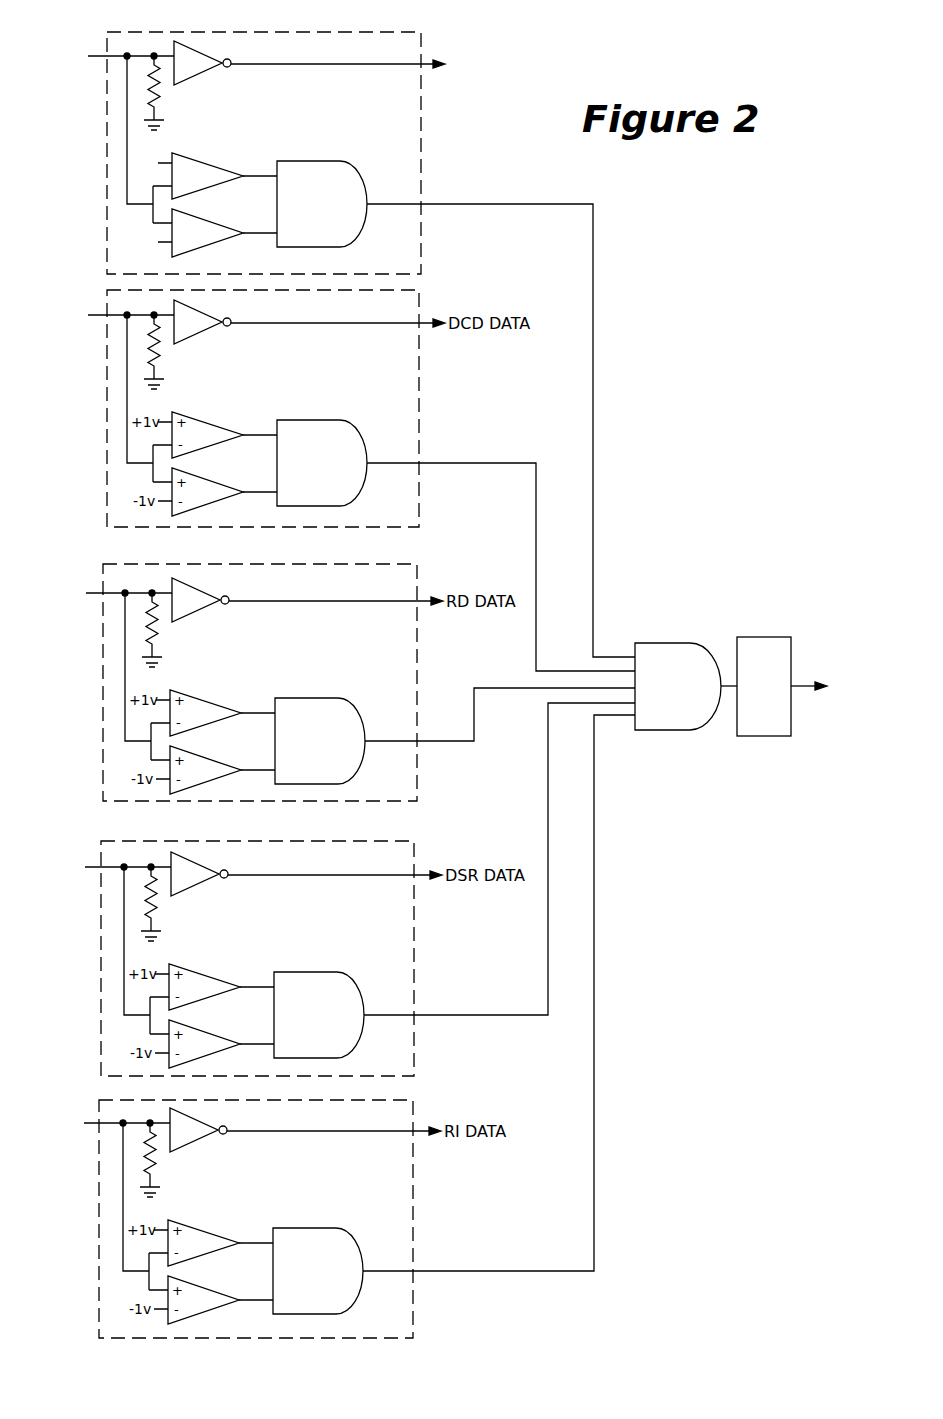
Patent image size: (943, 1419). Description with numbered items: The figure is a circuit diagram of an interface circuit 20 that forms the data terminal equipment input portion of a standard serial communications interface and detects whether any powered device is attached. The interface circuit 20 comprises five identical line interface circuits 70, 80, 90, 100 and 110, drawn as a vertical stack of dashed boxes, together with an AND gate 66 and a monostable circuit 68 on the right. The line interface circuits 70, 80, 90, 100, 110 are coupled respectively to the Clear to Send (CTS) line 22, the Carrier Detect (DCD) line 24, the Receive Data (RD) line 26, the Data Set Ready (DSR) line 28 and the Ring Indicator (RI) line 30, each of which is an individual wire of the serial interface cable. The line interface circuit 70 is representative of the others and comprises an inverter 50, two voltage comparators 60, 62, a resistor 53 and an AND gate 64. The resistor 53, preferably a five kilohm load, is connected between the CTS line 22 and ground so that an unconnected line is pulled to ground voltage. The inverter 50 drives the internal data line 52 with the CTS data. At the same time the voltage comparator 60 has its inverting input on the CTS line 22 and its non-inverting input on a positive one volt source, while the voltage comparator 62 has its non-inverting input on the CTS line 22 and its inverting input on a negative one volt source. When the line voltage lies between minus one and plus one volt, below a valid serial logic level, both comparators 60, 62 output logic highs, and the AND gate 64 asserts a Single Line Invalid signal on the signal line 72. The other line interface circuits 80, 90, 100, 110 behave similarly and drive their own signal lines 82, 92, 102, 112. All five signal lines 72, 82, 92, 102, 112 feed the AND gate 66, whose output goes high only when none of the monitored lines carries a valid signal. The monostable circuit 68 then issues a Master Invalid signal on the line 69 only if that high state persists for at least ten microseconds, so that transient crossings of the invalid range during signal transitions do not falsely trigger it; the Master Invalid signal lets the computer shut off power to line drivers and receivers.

The interface circuit 20 is at (748, 230).
The Clear to Send (CTS) line 22 is at (100, 58).
The Carrier Detect (DCD) line 24 is at (100, 318).
The Receive Data (RD) line 26 is at (98, 596).
The Data Set Ready (DSR) line 28 is at (97, 870).
The Ring Indicator (RI) line 30 is at (91, 1126).
The inverter 50 is at (197, 42).
The internal data line 52 is at (306, 63).
The resistor 53 is at (157, 86).
The voltage comparator 60 is at (207, 160).
The voltage comparator 62 is at (212, 245).
The AND gate 64 is at (335, 160).
The AND gate 66 is at (675, 643).
The monostable circuit 68 is at (765, 637).
The line 69 is at (808, 684).
The line interface circuit 70 is at (318, 31).
The signal line 72 is at (555, 205).
The line interface circuit 80 is at (420, 399).
The signal line 82 is at (510, 462).
The line interface circuit 90 is at (418, 643).
The signal line 92 is at (490, 690).
The line interface circuit 100 is at (415, 942).
The signal line 102 is at (500, 1016).
The line interface circuit 110 is at (414, 1181).
The signal line 112 is at (499, 993).